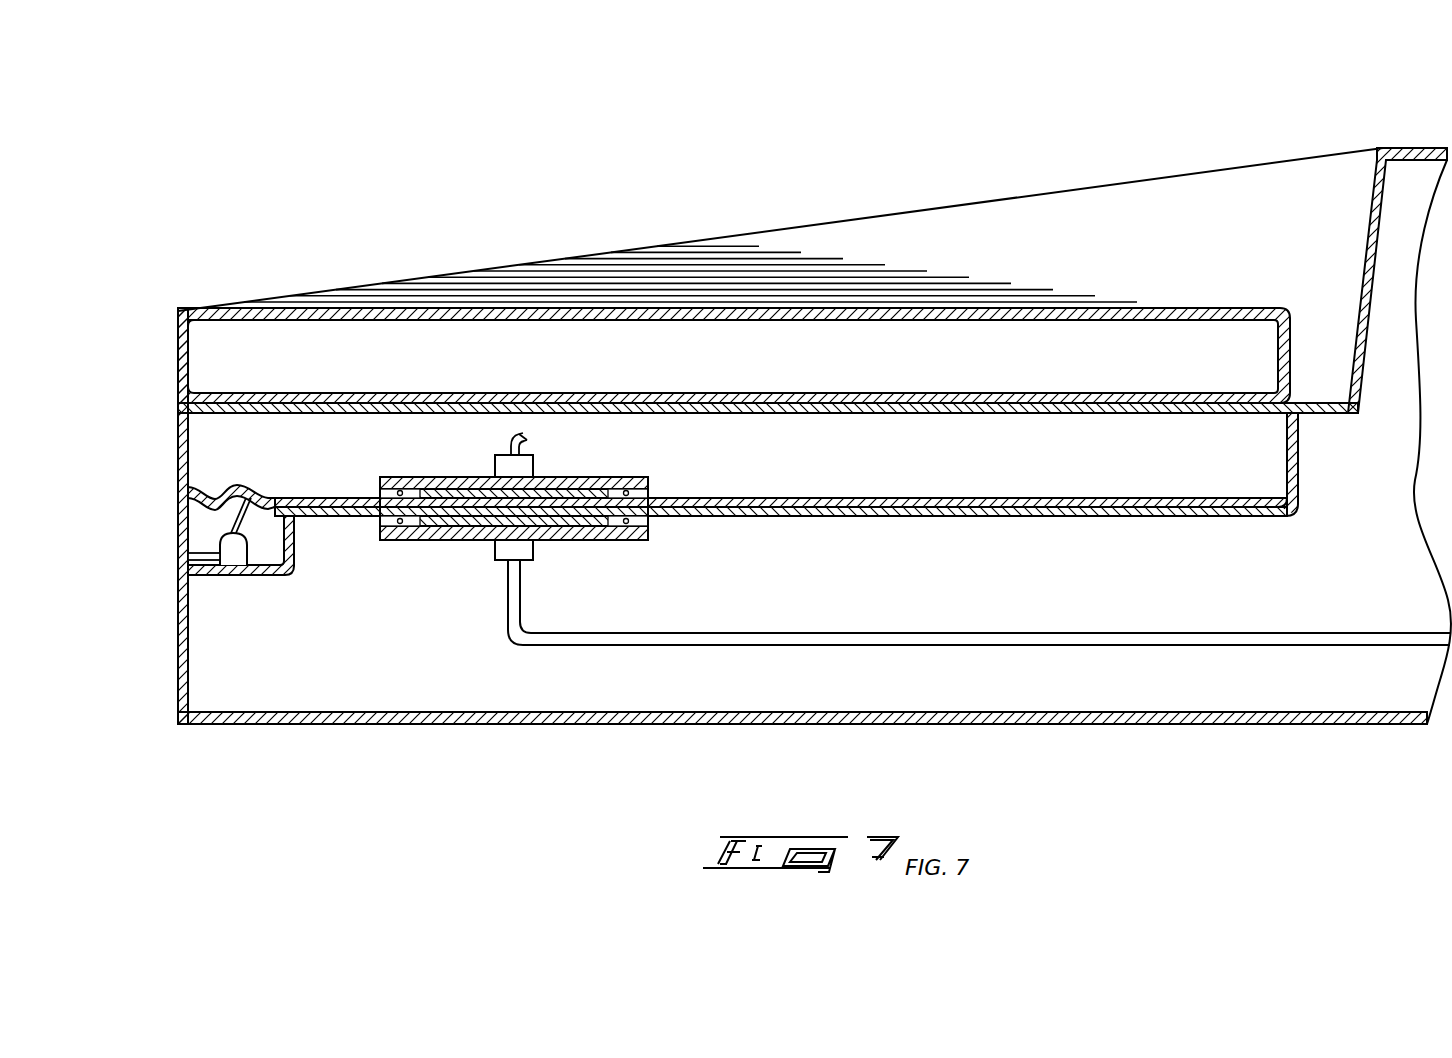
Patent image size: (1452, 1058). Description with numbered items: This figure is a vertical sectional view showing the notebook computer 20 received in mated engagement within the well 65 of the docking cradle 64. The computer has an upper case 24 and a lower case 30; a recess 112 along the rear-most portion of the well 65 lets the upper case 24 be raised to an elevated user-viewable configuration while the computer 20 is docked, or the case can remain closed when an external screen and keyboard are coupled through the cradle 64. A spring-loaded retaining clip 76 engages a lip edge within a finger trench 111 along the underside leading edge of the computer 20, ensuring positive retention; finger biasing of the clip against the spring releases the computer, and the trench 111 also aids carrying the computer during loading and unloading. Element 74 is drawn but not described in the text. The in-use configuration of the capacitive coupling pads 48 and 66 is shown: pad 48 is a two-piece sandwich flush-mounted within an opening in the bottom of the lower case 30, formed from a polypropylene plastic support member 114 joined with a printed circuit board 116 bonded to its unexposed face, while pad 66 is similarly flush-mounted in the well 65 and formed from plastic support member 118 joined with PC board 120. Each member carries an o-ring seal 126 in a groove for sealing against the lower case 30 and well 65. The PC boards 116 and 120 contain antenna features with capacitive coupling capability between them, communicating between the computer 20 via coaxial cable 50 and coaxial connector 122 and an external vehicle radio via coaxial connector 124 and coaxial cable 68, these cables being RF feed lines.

The notebook computer 20 is at (778, 421).
The upper case 24 is at (178, 364).
The lower case 30 is at (178, 438).
The capacitive coupling pad 48 is at (561, 535).
The coaxial cable 50 is at (514, 440).
The docking cradle 64 is at (1095, 177).
The well 65 is at (876, 236).
The capacitive coupling pad 66 is at (368, 545).
The coaxial cable 68 is at (978, 633).
The pocket 74 is at (174, 557).
The retaining clip 76 is at (200, 552).
The finger trench 111 is at (226, 513).
The recess 112 is at (1324, 302).
The plastic support member 114 is at (650, 477).
The printed circuit board 116 is at (550, 477).
The plastic support member 118 is at (650, 526).
The printed circuit board 120 is at (552, 540).
The coaxial connector 122 is at (494, 467).
The coaxial connector 124 is at (494, 553).
The o-ring seal 126 is at (650, 491).